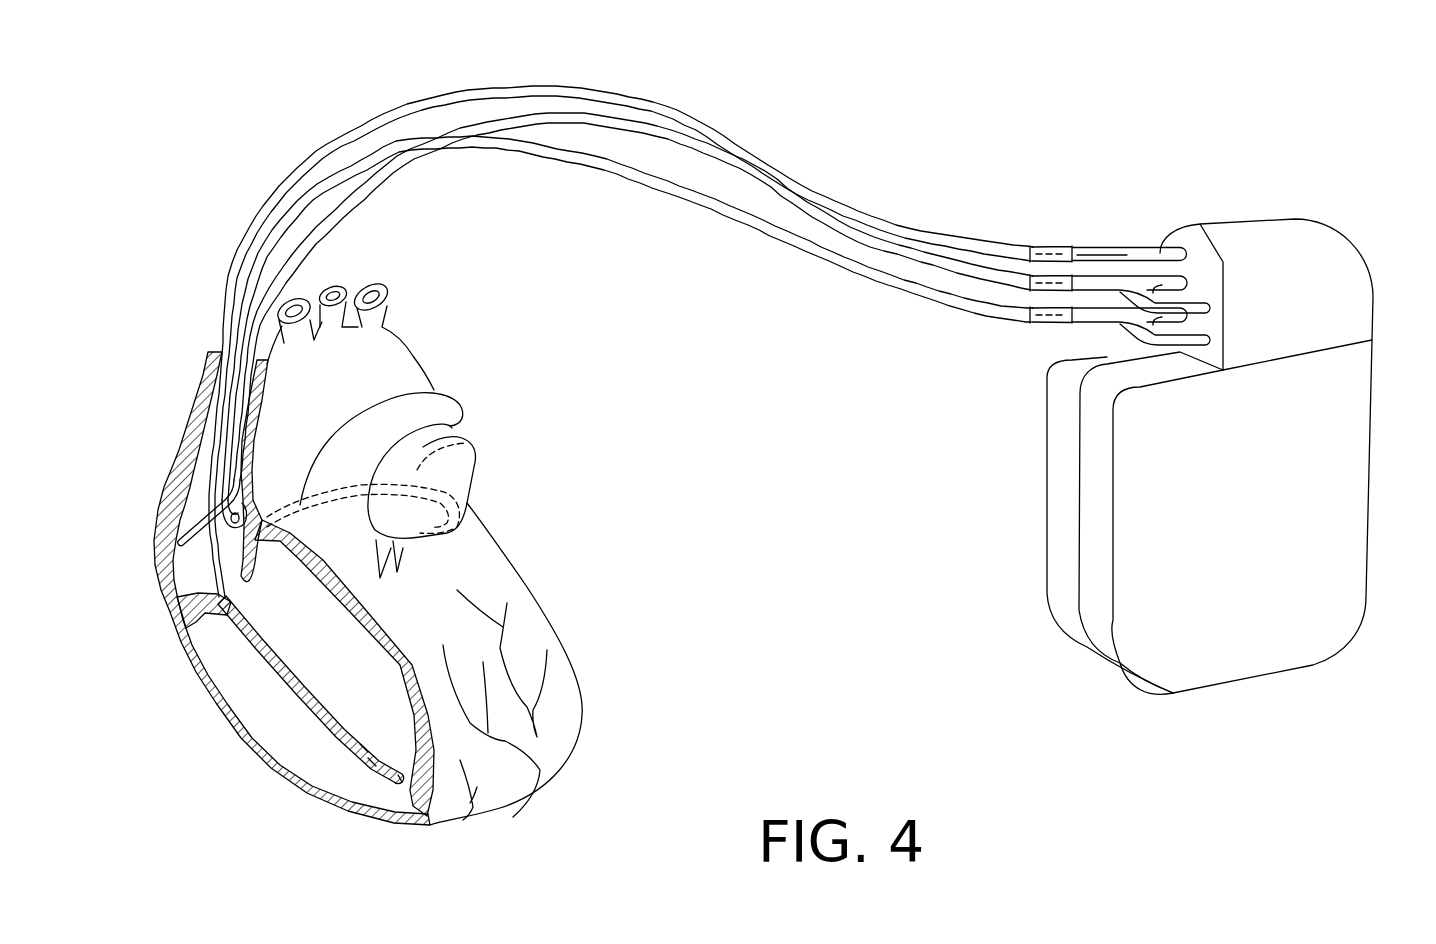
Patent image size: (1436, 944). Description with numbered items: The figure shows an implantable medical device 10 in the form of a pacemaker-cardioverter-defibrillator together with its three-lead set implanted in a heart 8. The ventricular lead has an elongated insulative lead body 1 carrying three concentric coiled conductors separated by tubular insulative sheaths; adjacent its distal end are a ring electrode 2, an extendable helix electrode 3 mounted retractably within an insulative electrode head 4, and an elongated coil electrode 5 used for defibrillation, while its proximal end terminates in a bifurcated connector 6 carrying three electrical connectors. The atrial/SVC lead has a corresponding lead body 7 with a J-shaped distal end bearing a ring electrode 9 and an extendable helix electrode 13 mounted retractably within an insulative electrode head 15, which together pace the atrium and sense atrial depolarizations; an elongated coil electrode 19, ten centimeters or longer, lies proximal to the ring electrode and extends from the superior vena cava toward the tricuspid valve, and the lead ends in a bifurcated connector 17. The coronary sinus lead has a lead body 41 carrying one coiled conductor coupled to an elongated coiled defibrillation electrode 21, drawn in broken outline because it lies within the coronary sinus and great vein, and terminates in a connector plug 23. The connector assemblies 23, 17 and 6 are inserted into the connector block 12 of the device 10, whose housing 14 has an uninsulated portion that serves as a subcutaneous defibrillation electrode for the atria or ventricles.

The ventricular lead body 1 is at (920, 290).
The ring electrode 2 is at (363, 747).
The extendable helix electrode 3 is at (403, 780).
The insulative electrode head 4 is at (370, 760).
The elongated coil electrode 5 is at (303, 693).
The bifurcated connector 6 is at (1090, 318).
The atrial/SVC lead body 7 is at (958, 268).
The heart 8 is at (507, 783).
The ring electrode 9 is at (208, 520).
The implantable medical device 10 is at (1380, 507).
The connector block 12 is at (1280, 238).
The extendable helix electrode 13 is at (263, 473).
The housing 14 is at (1140, 636).
The insulative electrode head 15 is at (230, 488).
The bifurcated connector 17 is at (1140, 290).
The elongated coil electrode 19 is at (210, 402).
The elongated coiled defibrillation electrode 21 is at (470, 443).
The connector plug 23 is at (1097, 253).
The coronary sinus lead body 41 is at (887, 225).